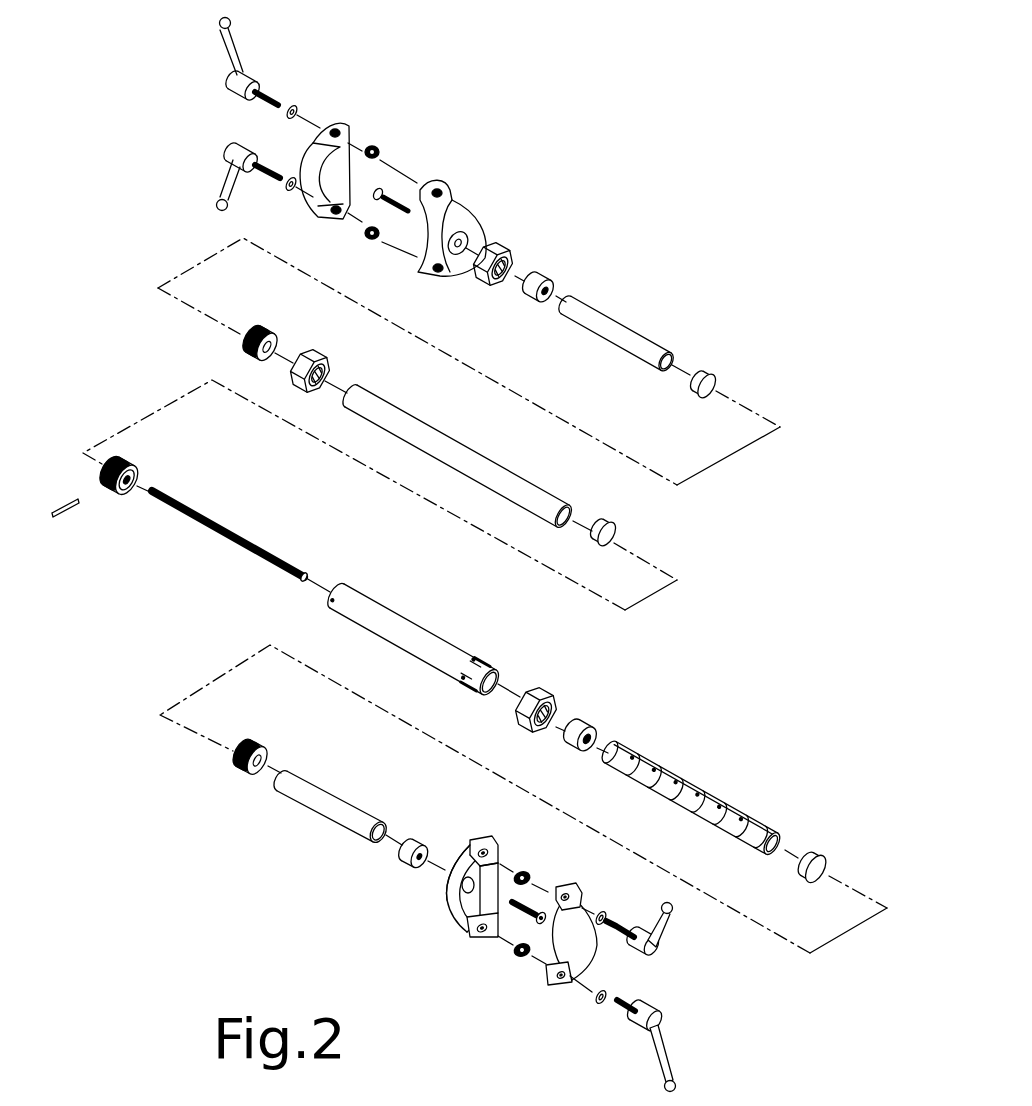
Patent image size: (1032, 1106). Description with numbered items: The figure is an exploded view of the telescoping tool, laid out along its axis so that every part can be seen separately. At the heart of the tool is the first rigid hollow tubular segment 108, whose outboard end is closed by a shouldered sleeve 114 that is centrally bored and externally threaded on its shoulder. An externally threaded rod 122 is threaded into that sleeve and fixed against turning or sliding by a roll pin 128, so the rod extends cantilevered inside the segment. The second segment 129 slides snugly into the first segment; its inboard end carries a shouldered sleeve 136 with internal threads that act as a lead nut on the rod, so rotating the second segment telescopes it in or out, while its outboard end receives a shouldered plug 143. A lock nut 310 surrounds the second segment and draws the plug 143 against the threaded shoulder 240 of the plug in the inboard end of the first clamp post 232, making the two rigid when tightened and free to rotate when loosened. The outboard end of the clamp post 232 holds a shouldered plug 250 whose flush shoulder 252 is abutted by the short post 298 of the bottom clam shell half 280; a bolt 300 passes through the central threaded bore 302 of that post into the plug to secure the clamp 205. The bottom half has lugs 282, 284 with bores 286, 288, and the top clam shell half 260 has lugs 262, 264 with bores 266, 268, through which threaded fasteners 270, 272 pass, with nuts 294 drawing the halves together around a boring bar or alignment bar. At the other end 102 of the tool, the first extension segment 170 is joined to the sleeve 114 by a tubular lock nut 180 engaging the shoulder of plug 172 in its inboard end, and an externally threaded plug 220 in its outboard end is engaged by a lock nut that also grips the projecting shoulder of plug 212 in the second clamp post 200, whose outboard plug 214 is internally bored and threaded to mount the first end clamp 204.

The opposite end of the tool 102 is at (471, 190).
The first end clamp 204 is at (401, 137).
The shouldered plug 214 is at (536, 280).
The second clamp post 200 is at (642, 314).
The shouldered plug 212 is at (712, 378).
The plug 220 is at (263, 338).
The tubular lock nut 180 is at (318, 368).
The first extension segment 170 is at (433, 423).
The shouldered plug 172 is at (616, 533).
The shouldered sleeve 114 is at (123, 460).
The externally threaded rod 122 is at (199, 509).
The roll pin 128 is at (76, 512).
The first rigid hollow tubular segment 108 is at (409, 604).
The lock nut 310 is at (550, 697).
The shouldered sleeve 136 is at (585, 722).
The second segment 129 is at (701, 774).
The shouldered plug 143 is at (813, 852).
The shoulder 240 is at (257, 750).
The first clamp post 232 is at (306, 773).
The shouldered plug 250 is at (417, 840).
The shoulder 252 is at (438, 868).
The bottom clam shell half 280 is at (452, 888).
The nut 294 is at (475, 840).
The bore 286 is at (497, 846).
The lug 282 is at (496, 843).
The short post 298 is at (447, 874).
The central threaded bore 302 is at (457, 887).
The lug 284 is at (466, 932).
The bore 288 is at (482, 945).
The bore 266 is at (563, 896).
The bolt 300 is at (502, 940).
The clamp 205 is at (518, 973).
The top clam shell half 260 is at (594, 974).
The lug 264 is at (547, 977).
The lug 262 is at (585, 905).
The bore 268 is at (568, 990).
The threaded fastener 270 is at (665, 952).
The threaded fastener 272 is at (666, 1027).